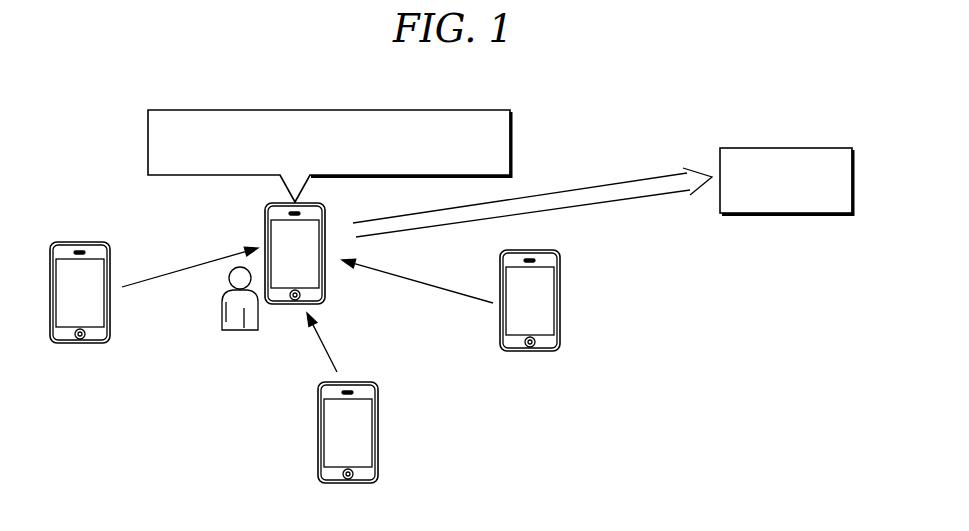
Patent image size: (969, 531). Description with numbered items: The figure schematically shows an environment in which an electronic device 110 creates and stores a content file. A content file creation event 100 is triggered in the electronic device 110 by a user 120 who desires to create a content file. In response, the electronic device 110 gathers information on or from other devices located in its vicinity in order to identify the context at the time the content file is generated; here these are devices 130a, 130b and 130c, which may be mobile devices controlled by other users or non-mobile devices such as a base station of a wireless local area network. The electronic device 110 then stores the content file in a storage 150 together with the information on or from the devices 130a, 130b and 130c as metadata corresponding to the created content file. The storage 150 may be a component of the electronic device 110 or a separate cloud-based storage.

The content file creation event 100 is at (464, 110).
The electronic device 110 is at (264, 232).
The user 120 is at (237, 330).
The device 130a is at (110, 308).
The device 130b is at (378, 437).
The device 130c is at (560, 300).
The storage 150 is at (806, 148).